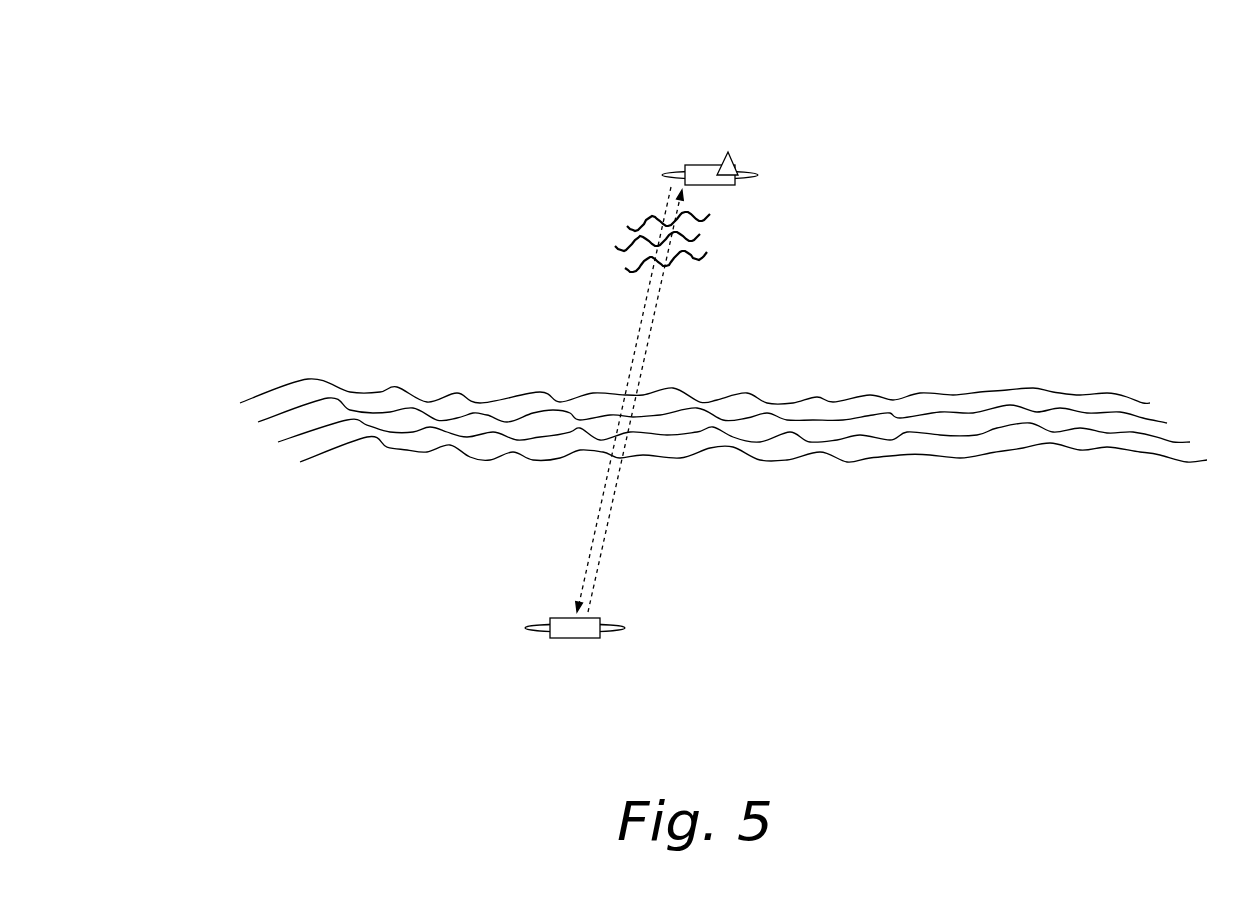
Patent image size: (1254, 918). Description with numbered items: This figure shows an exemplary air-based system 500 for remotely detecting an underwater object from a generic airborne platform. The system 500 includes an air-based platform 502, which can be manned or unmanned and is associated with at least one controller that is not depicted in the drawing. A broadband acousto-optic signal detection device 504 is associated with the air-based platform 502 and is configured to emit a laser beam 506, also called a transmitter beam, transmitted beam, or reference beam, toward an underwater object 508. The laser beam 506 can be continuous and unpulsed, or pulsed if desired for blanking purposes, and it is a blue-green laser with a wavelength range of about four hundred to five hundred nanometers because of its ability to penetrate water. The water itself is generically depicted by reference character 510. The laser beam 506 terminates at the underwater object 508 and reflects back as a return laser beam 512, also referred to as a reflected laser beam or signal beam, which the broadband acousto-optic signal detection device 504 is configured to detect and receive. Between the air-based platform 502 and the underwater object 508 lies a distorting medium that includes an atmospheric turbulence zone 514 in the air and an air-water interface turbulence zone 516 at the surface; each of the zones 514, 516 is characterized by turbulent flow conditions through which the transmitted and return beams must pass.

The air-based system 500 is at (1065, 140).
The air-based platform 502 is at (769, 165).
The broadband acousto-optic signal detection device 504 is at (718, 152).
The laser beam 506 is at (626, 340).
The underwater object 508 is at (596, 649).
The water 510 is at (436, 547).
The return laser beam 512 is at (613, 521).
The atmospheric turbulence zone 514 is at (734, 259).
The air-water interface turbulence zone 516 is at (989, 402).